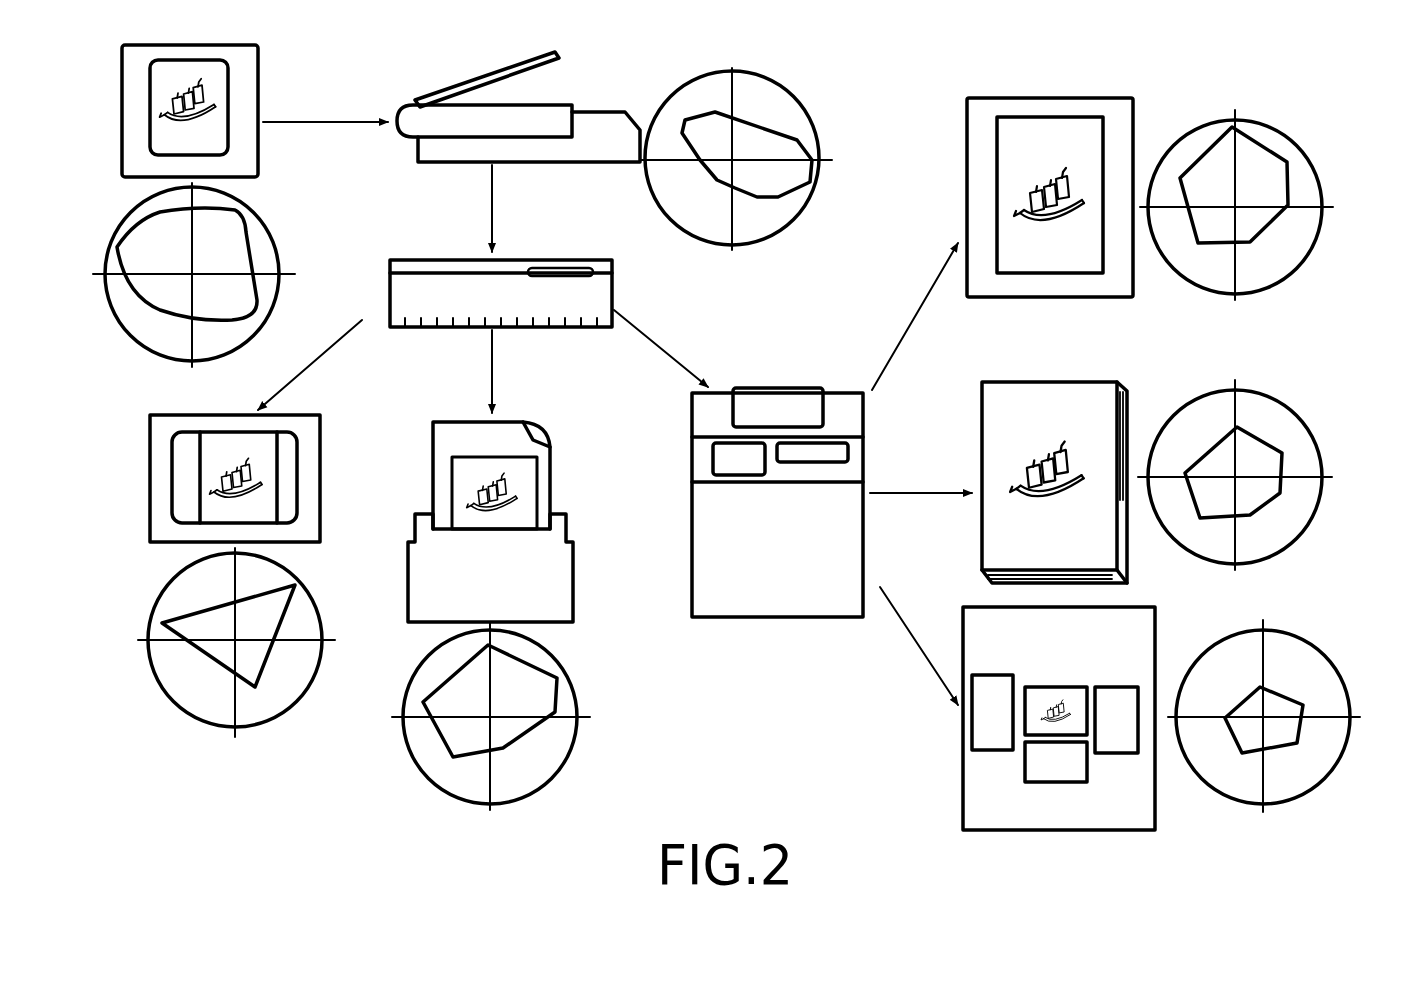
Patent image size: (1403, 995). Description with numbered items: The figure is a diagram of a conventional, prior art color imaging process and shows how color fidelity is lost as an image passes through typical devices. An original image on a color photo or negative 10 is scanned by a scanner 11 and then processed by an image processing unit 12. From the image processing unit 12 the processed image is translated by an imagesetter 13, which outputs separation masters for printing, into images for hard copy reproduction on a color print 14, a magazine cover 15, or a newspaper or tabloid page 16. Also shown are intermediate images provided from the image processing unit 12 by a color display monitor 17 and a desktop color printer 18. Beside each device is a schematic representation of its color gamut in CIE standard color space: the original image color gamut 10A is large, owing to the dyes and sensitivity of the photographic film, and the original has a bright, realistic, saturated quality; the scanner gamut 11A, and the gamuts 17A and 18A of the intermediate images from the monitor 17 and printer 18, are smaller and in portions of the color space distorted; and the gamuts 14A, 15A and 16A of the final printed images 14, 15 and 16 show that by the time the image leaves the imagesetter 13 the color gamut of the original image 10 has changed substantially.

The color photo or negative 10 is at (259, 73).
The original image color gamut 10A is at (267, 227).
The scanner 11 is at (600, 112).
The scanner color gamut 11A is at (803, 102).
The image processing unit 12 is at (572, 260).
The imagesetter 13 is at (787, 617).
The color print 14 is at (1103, 98).
The color print color gamut 14A is at (1290, 137).
The magazine cover 15 is at (1082, 382).
The magazine cover color gamut 15A is at (1303, 425).
The newspaper or tabloid page 16 is at (1156, 630).
The newspaper page color gamut 16A is at (1315, 645).
The color display monitor 17 is at (305, 415).
The color display monitor color gamut 17A is at (307, 590).
The desktop color printer 18 is at (575, 542).
The desktop color printer color gamut 18A is at (562, 667).